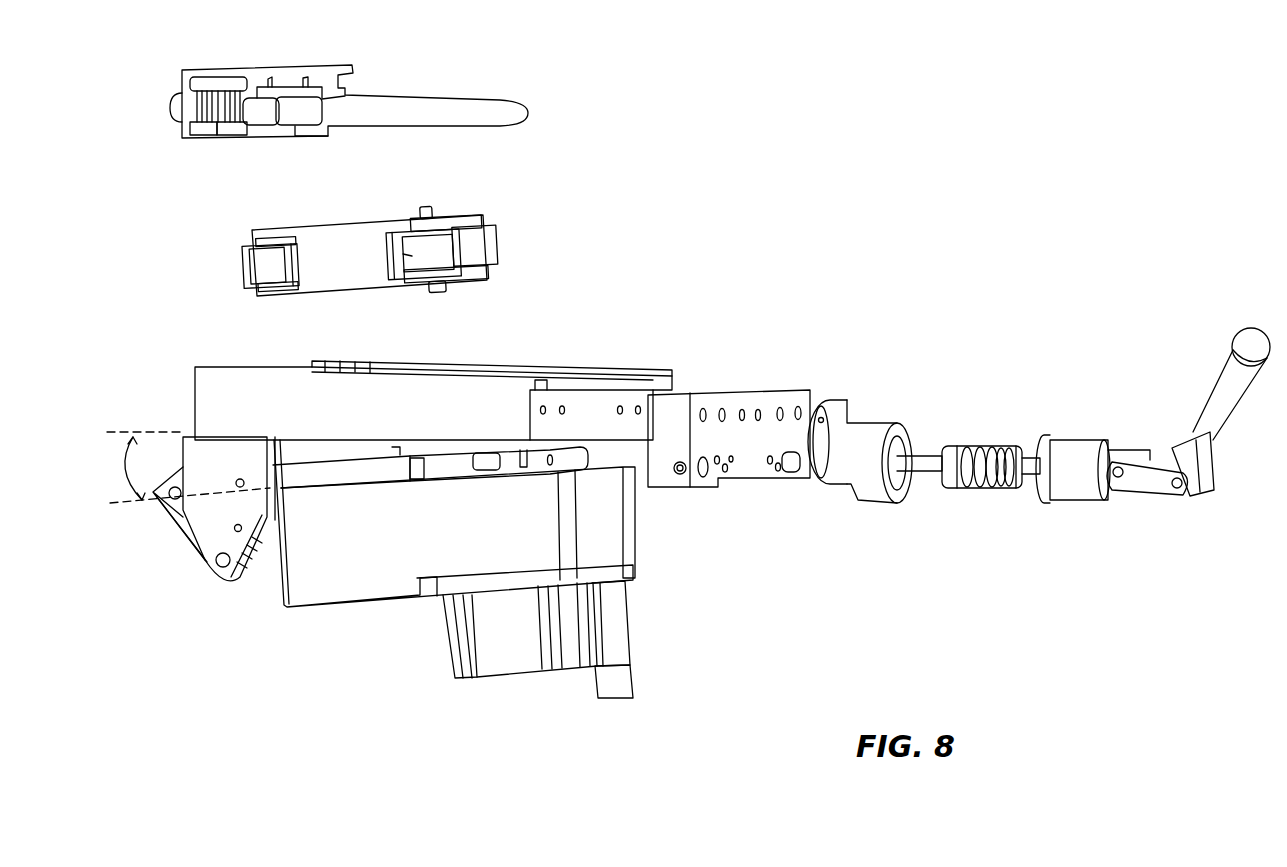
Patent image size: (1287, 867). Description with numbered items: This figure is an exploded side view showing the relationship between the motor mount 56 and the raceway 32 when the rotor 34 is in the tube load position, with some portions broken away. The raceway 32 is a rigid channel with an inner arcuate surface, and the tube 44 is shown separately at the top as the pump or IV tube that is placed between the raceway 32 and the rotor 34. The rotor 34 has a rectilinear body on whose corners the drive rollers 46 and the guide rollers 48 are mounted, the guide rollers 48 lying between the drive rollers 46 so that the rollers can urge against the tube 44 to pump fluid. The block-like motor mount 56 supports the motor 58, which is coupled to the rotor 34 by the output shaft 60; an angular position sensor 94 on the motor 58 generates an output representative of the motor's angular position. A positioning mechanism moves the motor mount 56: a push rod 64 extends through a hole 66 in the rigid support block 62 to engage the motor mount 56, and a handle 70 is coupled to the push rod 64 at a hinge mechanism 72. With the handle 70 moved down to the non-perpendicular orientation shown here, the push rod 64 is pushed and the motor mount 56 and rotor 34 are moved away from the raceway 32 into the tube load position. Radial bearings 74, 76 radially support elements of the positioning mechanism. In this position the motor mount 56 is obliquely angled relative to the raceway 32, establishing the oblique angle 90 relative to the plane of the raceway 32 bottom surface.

The raceway 32 is at (600, 372).
The rotor 34 is at (330, 226).
The tube 44 is at (527, 100).
The drive rollers 46 is at (247, 265).
The guide rollers 48 is at (410, 255).
The motor mount 56 is at (625, 535).
The motor 58 is at (618, 618).
The output shaft 60 is at (400, 447).
The support block 62 is at (790, 390).
The push rod 64 is at (923, 460).
The hole 66 is at (678, 474).
The handle 70 is at (1217, 373).
The hinge mechanism 72 is at (1145, 487).
The radial bearing 74 is at (1012, 450).
The radial bearing 76 is at (873, 497).
The oblique angle 90 is at (127, 465).
The angular position sensor 94 is at (620, 680).